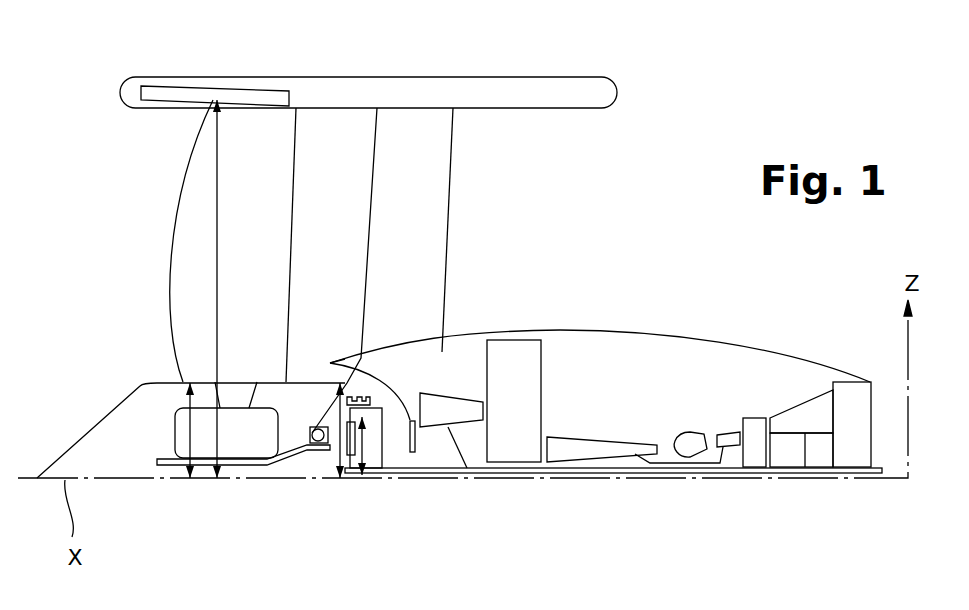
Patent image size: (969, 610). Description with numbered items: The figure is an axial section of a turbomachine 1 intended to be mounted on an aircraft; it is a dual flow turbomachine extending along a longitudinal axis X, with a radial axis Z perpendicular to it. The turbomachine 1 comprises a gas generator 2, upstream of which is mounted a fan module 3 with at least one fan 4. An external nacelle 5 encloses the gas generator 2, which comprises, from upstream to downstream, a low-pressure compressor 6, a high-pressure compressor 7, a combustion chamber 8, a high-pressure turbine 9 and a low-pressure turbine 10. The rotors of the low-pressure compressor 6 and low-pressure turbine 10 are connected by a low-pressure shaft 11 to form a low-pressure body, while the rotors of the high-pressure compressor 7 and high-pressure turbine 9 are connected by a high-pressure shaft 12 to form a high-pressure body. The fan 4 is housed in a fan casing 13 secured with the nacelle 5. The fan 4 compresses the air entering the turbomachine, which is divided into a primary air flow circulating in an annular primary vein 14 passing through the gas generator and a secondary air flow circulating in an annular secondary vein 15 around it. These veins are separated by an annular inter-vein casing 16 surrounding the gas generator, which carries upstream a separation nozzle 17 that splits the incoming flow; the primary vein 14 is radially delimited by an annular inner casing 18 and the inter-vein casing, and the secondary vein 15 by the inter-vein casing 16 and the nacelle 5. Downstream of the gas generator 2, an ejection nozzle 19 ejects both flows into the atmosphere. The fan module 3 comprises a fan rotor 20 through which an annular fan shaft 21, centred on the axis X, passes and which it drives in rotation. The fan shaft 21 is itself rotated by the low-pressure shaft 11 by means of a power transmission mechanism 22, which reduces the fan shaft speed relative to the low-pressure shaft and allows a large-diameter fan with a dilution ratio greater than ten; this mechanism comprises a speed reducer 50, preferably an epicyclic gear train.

The turbomachine 1 is at (678, 168).
The gas generator 2 is at (647, 370).
The fan module 3 is at (147, 283).
The fan 4 is at (155, 175).
The external nacelle 5 is at (328, 95).
The low-pressure compressor 6 is at (463, 400).
The high-pressure compressor 7 is at (583, 447).
The combustion chamber 8 is at (688, 443).
The high-pressure turbine 9 is at (728, 430).
The low-pressure turbine 10 is at (795, 423).
The low-pressure shaft 11 is at (493, 470).
The high-pressure shaft 12 is at (700, 465).
The fan casing 13 is at (243, 95).
The annular primary vein 14 is at (390, 392).
The annular secondary vein 15 is at (410, 245).
The annular inter-vein casing 16 is at (432, 373).
The separation nozzle 17 is at (355, 372).
The annular inner casing 18 is at (435, 448).
The ejection nozzle 19 is at (852, 440).
The fan rotor 20 is at (167, 385).
The annular fan shaft 21 is at (252, 465).
The power transmission mechanism 22 is at (362, 486).
The speed reducer 50 is at (370, 442).